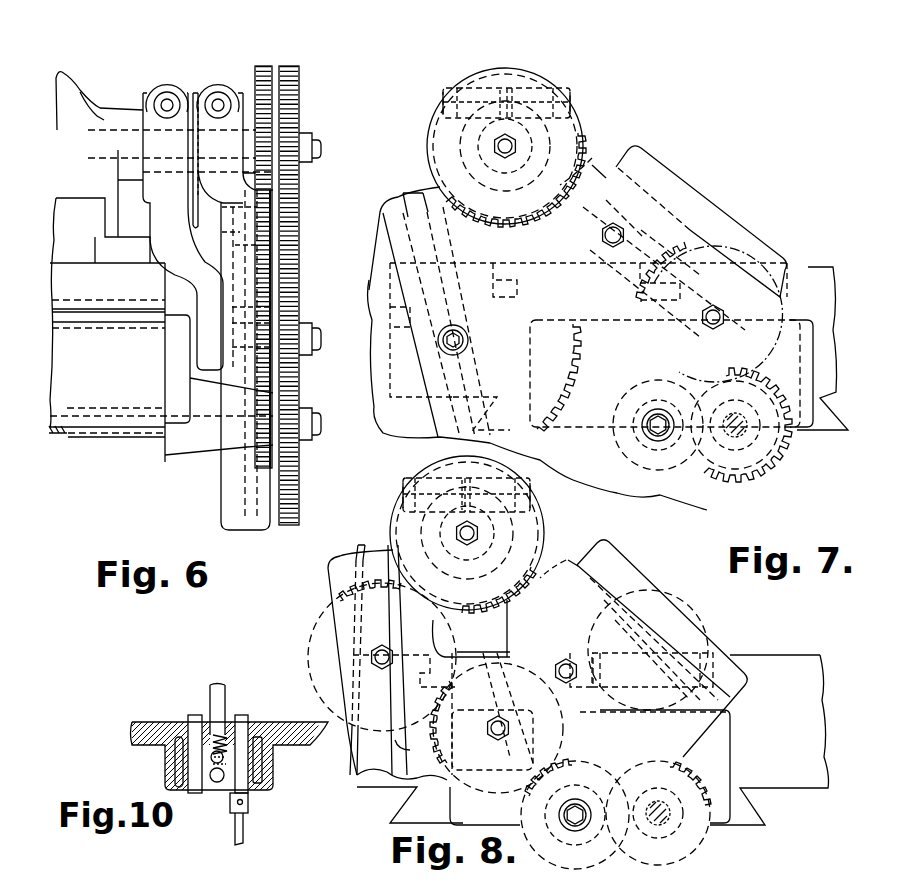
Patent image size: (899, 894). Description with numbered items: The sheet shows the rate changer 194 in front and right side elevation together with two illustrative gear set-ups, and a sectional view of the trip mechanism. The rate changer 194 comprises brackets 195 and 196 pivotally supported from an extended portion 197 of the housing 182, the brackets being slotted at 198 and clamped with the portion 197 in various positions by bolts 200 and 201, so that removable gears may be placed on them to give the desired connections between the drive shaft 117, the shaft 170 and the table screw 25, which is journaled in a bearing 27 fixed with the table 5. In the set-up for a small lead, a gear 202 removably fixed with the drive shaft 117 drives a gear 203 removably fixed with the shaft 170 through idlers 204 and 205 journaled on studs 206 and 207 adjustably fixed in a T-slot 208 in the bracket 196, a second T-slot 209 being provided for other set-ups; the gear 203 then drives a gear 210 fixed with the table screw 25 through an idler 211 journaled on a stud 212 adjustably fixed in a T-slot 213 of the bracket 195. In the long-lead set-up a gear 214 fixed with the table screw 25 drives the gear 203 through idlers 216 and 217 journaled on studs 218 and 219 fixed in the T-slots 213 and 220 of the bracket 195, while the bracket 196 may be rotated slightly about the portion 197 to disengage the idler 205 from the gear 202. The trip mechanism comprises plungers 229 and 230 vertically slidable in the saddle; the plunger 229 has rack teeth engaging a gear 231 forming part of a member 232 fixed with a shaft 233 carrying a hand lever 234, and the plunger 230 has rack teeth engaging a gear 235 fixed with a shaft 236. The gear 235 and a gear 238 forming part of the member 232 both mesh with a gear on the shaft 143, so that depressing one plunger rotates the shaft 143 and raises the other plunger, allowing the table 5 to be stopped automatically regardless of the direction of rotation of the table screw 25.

In FIG. 7, the table 5 is at (830, 266).
In FIG. 8, the table 5 is at (790, 783).
In FIG. 6, the table screw 25 is at (96, 440).
In FIG. 7, the table screw 25 is at (655, 395).
In FIG. 8, the table screw 25 is at (583, 782).
In FIG. 6, the bearing 27 is at (177, 452).
In FIG. 6, the drive shaft 117 is at (50, 440).
In FIG. 7, the drive shaft 117 is at (745, 405).
In FIG. 8, the drive shaft 117 is at (670, 775).
In FIG. 10, the shaft 143 is at (212, 690).
In FIG. 6, the shaft 170 is at (108, 138).
In FIG. 7, the shaft 170 is at (513, 140).
In FIG. 8, the shaft 170 is at (478, 531).
In FIG. 6, the housing 182 is at (61, 72).
In FIG. 6, the rate changer 194 is at (303, 107).
In FIG. 7, the rate changer 194 is at (700, 150).
In FIG. 8, the rate changer 194 is at (613, 558).
In FIG. 6, the bracket 195 is at (213, 95).
In FIG. 7, the bracket 195 is at (392, 200).
In FIG. 8, the bracket 195 is at (363, 555).
In FIG. 6, the bracket 196 is at (167, 85).
In FIG. 7, the bracket 196 is at (720, 227).
In FIG. 8, the bracket 196 is at (635, 585).
In FIG. 6, the extended portion of housing 197 is at (203, 123).
In FIG. 7, the extended portion of housing 197 is at (487, 149).
In FIG. 8, the extended portion of housing 197 is at (405, 520).
In FIG. 7, the slot 198 is at (505, 90).
In FIG. 8, the slot 198 is at (480, 465).
In FIG. 6, the bolt 200 is at (222, 90).
In FIG. 7, the bolt 200 is at (440, 100).
In FIG. 8, the bolt 200 is at (410, 480).
In FIG. 6, the bolt 201 is at (163, 96).
In FIG. 7, the gear 202 is at (768, 455).
In FIG. 8, the gear 202 is at (703, 840).
In FIG. 7, the gear 203 is at (580, 126).
In FIG. 8, the gear 203 is at (397, 530).
In FIG. 7, the idler 204 is at (600, 165).
In FIG. 8, the idler 204 is at (588, 560).
In FIG. 7, the idler 205 is at (740, 255).
In FIG. 8, the idler 205 is at (740, 703).
In FIG. 7, the stud 206 is at (630, 205).
In FIG. 7, the stud 207 is at (727, 285).
In FIG. 7, the T-slot 208 is at (760, 340).
In FIG. 7, the T-slot 209 is at (692, 225).
In FIG. 7, the gear 210 is at (722, 480).
In FIG. 7, the idler 211 is at (380, 243).
In FIG. 7, the stud 212 is at (460, 340).
In FIG. 7, the T-slot 213 is at (400, 205).
In FIG. 8, the T-slot 213 is at (417, 750).
In FIG. 8, the gear 214 is at (590, 868).
In FIG. 8, the idler 216 is at (493, 787).
In FIG. 8, the idler 217 is at (323, 618).
In FIG. 8, the stud 218 is at (508, 728).
In FIG. 8, the stud 219 is at (420, 625).
In FIG. 8, the T-slot 220 is at (495, 763).
In FIG. 10, the plunger 229 is at (225, 790).
In FIG. 10, the plunger 230 is at (245, 735).
In FIG. 10, the gear 231 is at (228, 800).
In FIG. 10, the member 232 is at (256, 758).
In FIG. 10, the shaft 233 is at (268, 785).
In FIG. 10, the hand lever 234 is at (245, 832).
In FIG. 10, the gear 235 is at (170, 748).
In FIG. 10, the shaft 236 is at (195, 770).
In FIG. 10, the gear 238 is at (222, 722).